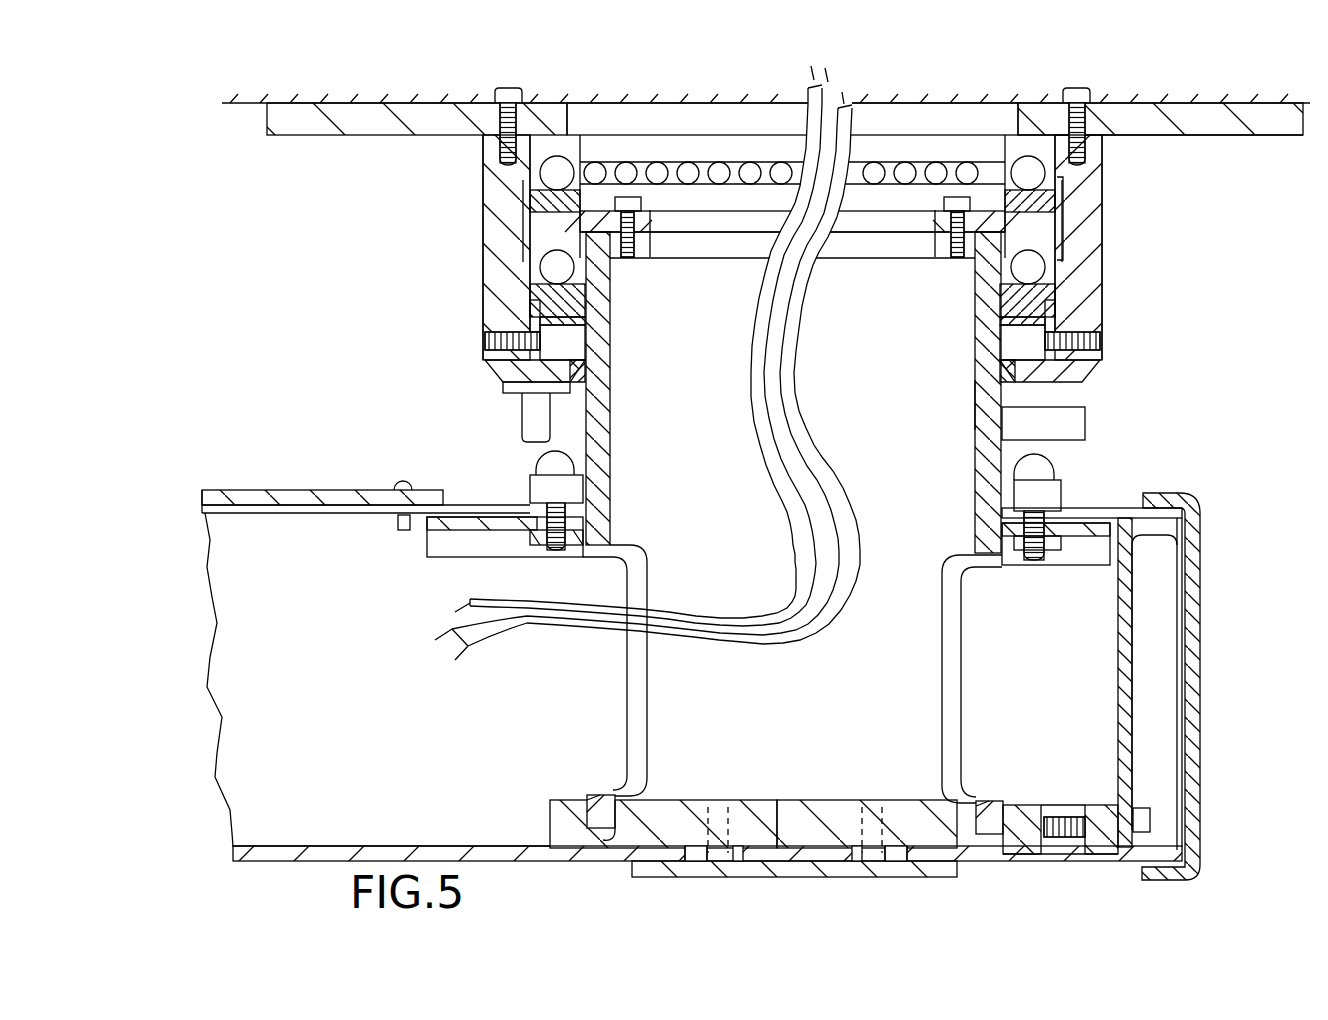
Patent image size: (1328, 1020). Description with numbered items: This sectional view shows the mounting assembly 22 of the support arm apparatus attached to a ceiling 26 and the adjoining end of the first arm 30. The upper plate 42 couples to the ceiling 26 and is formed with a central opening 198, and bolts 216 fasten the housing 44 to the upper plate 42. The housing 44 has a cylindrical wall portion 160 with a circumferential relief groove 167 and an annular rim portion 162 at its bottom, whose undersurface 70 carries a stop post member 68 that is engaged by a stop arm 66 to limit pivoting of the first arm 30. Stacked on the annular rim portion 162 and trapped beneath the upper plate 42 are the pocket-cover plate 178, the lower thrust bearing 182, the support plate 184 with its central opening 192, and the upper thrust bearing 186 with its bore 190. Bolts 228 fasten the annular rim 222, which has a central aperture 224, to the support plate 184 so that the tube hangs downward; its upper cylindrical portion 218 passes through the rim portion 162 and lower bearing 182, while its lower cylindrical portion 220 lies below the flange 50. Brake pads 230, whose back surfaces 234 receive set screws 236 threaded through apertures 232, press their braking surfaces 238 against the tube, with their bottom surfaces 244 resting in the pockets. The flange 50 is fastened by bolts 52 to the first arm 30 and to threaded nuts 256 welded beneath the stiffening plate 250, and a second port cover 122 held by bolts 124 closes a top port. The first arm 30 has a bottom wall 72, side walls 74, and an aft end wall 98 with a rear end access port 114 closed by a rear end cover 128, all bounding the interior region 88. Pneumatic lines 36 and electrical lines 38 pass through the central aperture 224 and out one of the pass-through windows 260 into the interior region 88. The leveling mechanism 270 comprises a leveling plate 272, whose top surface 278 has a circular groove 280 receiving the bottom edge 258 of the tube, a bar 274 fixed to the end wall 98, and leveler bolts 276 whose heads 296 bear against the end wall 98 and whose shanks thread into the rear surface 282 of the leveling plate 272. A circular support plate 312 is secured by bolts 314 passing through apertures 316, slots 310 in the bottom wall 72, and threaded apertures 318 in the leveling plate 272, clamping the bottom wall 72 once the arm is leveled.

The ceiling 26 is at (246, 100).
The bolts 216 is at (508, 92).
The central opening 198 is at (640, 116).
The upper plate 42 is at (1226, 148).
The cylindrical wall portion 160 is at (505, 200).
The housing 44 is at (1114, 254).
The mounting assembly 22 is at (296, 181).
The circumferential relief groove 167 is at (1072, 230).
The bore 190 is at (692, 160).
The central opening 192 is at (703, 226).
The central aperture 224 is at (872, 247).
The annular rim 222 is at (642, 240).
The bolts 228 is at (952, 200).
The upper thrust bearing 186 is at (522, 173).
The support plate 184 is at (532, 233).
The lower thrust bearing 182 is at (542, 270).
The pocket-cover plate 178 is at (537, 300).
The back surface 234 is at (530, 322).
The threaded apertures 232 is at (490, 340).
The set screws 236 is at (490, 356).
The undersurface 70 is at (1063, 390).
The stop post member 68 is at (530, 414).
The braking surface 238 is at (590, 326).
The brake pads 230 is at (570, 340).
The bottom surface 244 is at (590, 366).
The upper cylindrical portion 218 is at (605, 296).
The annular rim portion 162 is at (978, 400).
The stop arm 66 is at (1060, 419).
The pneumatic lines 36 is at (815, 93).
The electrical lines 38 is at (862, 120).
The bolts 52 is at (546, 464).
The flange 50 is at (530, 488).
The second port cover 122 is at (278, 490).
The bolts 124 is at (396, 478).
The first arm 30 is at (194, 581).
The side walls 74 is at (260, 673).
The interior region 88 is at (263, 630).
The bottom wall 72 is at (275, 850).
The stiffening plate 250 is at (430, 536).
The threaded nuts 256 is at (540, 546).
The pass-through windows 260 is at (655, 693).
The leveling plate 272 is at (658, 808).
The top surface 278 is at (840, 798).
The circular support plate 312 is at (776, 875).
The circular groove 280 is at (597, 795).
The bottom edge 258 is at (597, 830).
The bar 274 is at (1105, 818).
The leveler bolts 276 is at (1066, 817).
The rear surface 282 is at (1044, 842).
The leveling mechanism 270 is at (1098, 766).
The head 296 is at (1144, 822).
The slots 310 is at (700, 848).
The threaded aperture 318 is at (735, 806).
The bolts 314 is at (735, 865).
The aperture 316 is at (700, 866).
The lower cylindrical portion 220 is at (992, 535).
The rear end access port 114 is at (1130, 626).
The aft end wall 98 is at (1188, 561).
The rear end cover 128 is at (1195, 628).